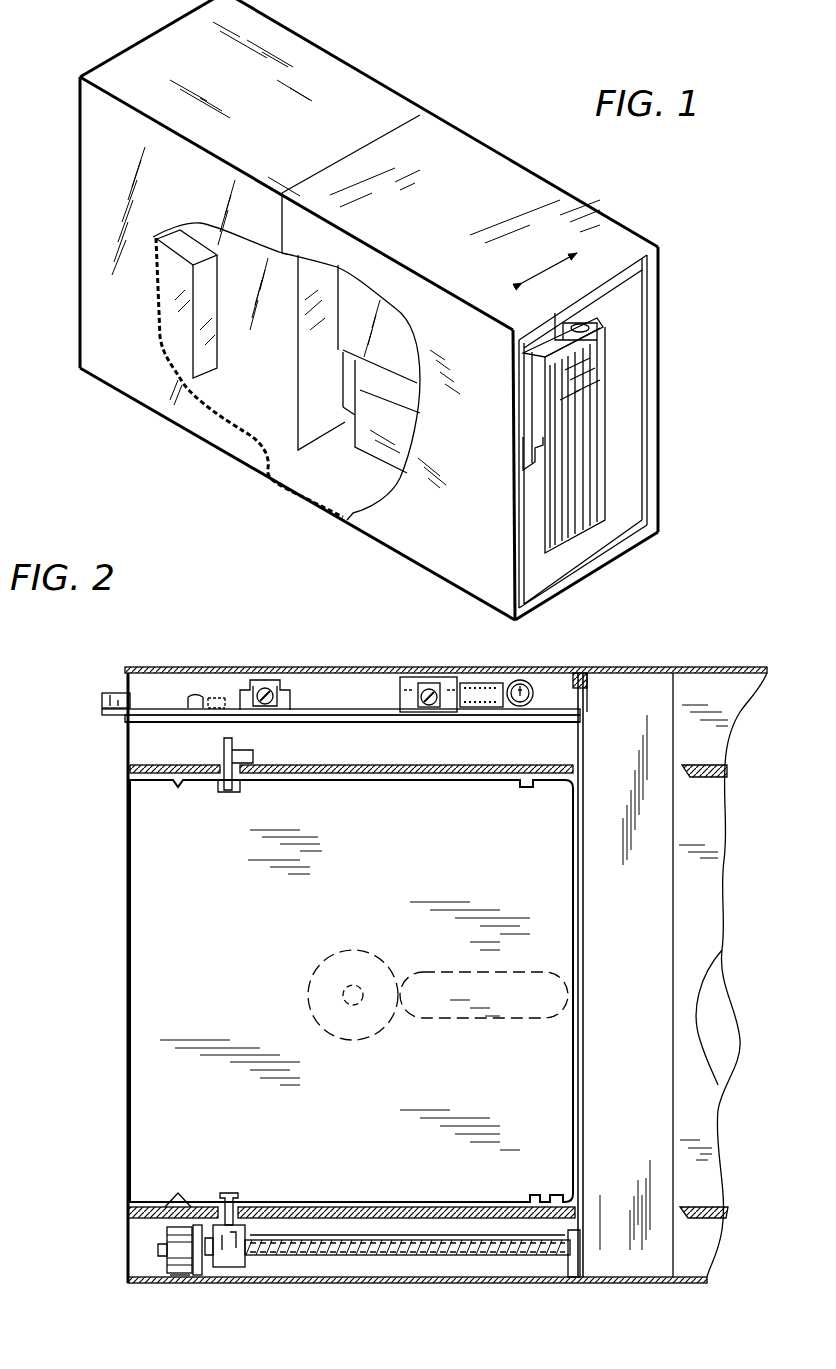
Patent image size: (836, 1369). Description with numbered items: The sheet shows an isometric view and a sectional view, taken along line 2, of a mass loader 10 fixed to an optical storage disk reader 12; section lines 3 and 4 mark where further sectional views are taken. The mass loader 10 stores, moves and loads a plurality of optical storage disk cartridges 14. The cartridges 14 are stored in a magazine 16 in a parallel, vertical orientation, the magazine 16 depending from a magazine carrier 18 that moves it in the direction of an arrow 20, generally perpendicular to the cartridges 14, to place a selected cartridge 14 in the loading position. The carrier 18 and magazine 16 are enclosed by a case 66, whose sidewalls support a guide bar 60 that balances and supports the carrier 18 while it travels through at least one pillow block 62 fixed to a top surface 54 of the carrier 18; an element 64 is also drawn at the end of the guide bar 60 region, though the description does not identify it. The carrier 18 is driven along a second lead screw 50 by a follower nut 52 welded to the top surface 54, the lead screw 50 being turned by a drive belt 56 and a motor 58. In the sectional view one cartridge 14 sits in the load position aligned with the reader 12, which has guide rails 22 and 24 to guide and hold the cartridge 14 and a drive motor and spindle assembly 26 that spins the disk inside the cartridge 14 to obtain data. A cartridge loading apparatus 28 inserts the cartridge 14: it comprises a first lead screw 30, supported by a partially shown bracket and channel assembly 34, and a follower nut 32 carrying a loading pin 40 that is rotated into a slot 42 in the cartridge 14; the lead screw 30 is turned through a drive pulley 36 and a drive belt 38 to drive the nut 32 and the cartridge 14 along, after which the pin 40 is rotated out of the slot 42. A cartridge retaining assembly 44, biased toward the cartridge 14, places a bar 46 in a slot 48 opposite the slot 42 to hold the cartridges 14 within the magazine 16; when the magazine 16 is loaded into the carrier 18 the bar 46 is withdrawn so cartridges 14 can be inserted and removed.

In FIG. 1, the mass loader 10 is at (693, 498).
In FIG. 1, the optical storage disk reader 12 is at (386, 74).
In FIG. 2, the optical storage disk reader 12 is at (690, 1278).
In FIG. 1, the optical storage disk cartridge 14 is at (568, 552).
In FIG. 2, the optical storage disk cartridge 14 is at (130, 950).
In FIG. 1, the magazine 16 is at (603, 480).
In FIG. 2, the magazine 16 is at (130, 768).
In FIG. 1, the magazine carrier 18 is at (603, 370).
In FIG. 2, the magazine carrier 18 is at (137, 718).
In FIG. 1, the arrow 20 is at (538, 278).
In FIG. 2, the guide rail 22 is at (727, 770).
In FIG. 2, the guide rail 24 is at (730, 1220).
In FIG. 2, the drive motor and spindle assembly 26 is at (792, 1012).
In FIG. 2, the cartridge loading apparatus 28 is at (148, 1263).
In FIG. 2, the first lead screw 30 is at (270, 1256).
In FIG. 2, the follower nut 32 is at (216, 1270).
In FIG. 2, the bracket and channel assembly 34 is at (510, 1284).
In FIG. 2, the drive pulley 36 is at (185, 1276).
In FIG. 2, the drive belt 38 is at (165, 1246).
In FIG. 2, the loading pin 40 is at (244, 1225).
In FIG. 2, the slot 42 is at (230, 1193).
In FIG. 2, the cartridge retaining assembly 44 is at (262, 745).
In FIG. 2, the bar 46 is at (224, 782).
In FIG. 2, the slot 48 is at (226, 792).
In FIG. 2, the second lead screw 50 is at (410, 712).
In FIG. 2, the follower nut 52 is at (445, 712).
In FIG. 2, the top surface 54 is at (310, 720).
In FIG. 2, the drive belt 56 is at (497, 708).
In FIG. 2, the motor 58 is at (528, 710).
In FIG. 2, the guide bar 60 is at (266, 688).
In FIG. 2, the pillow block 62 is at (243, 690).
In FIG. 2, the end tab 64 is at (137, 688).
In FIG. 1, the case 66 is at (497, 470).
In FIG. 2, the case 66 is at (158, 667).
In FIG. 1, the section line 2— 2 is at (478, 122).
In FIG. 2, the section line 3- 3 is at (50, 607).
In FIG. 2, the section line 4- 4 is at (290, 628).